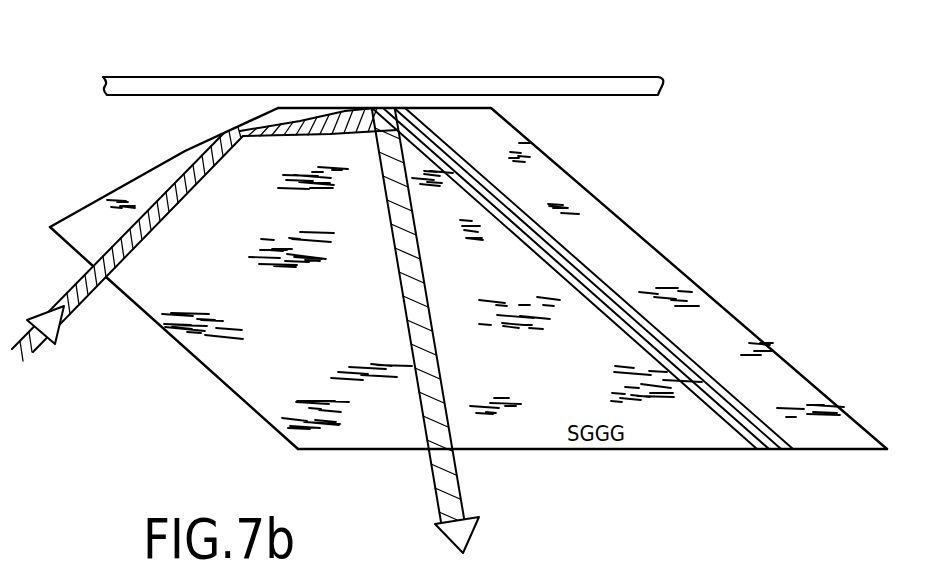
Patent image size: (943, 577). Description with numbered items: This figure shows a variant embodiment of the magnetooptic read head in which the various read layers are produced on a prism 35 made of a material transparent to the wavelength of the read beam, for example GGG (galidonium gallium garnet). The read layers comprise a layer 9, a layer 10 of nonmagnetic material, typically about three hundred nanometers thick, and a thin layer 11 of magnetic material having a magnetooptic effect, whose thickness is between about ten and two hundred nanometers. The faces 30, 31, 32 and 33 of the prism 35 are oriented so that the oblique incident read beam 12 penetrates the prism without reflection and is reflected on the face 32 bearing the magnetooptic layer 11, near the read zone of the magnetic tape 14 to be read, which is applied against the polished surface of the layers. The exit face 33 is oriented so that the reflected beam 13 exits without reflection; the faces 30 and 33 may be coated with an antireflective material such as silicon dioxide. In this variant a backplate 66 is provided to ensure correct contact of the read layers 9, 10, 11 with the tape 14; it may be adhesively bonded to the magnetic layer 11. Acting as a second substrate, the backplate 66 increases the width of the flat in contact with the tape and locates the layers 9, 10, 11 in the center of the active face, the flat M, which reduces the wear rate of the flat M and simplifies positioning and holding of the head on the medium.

The layer 9 is at (455, 156).
The layer of nonmagnetic material 10 is at (432, 140).
The thin layer of magnetic material 11 is at (458, 180).
The oblique incident optical beam 12 is at (278, 133).
The reflected beam 13 is at (447, 482).
The magnetic tape 14 is at (580, 83).
The flat M is at (387, 90).
The face of the prism 30 is at (157, 323).
The face of the prism 31 is at (123, 190).
The face of the prism 32 is at (530, 247).
The exit face 33 is at (655, 449).
The prism 35 is at (275, 382).
The backplate 66 is at (665, 283).